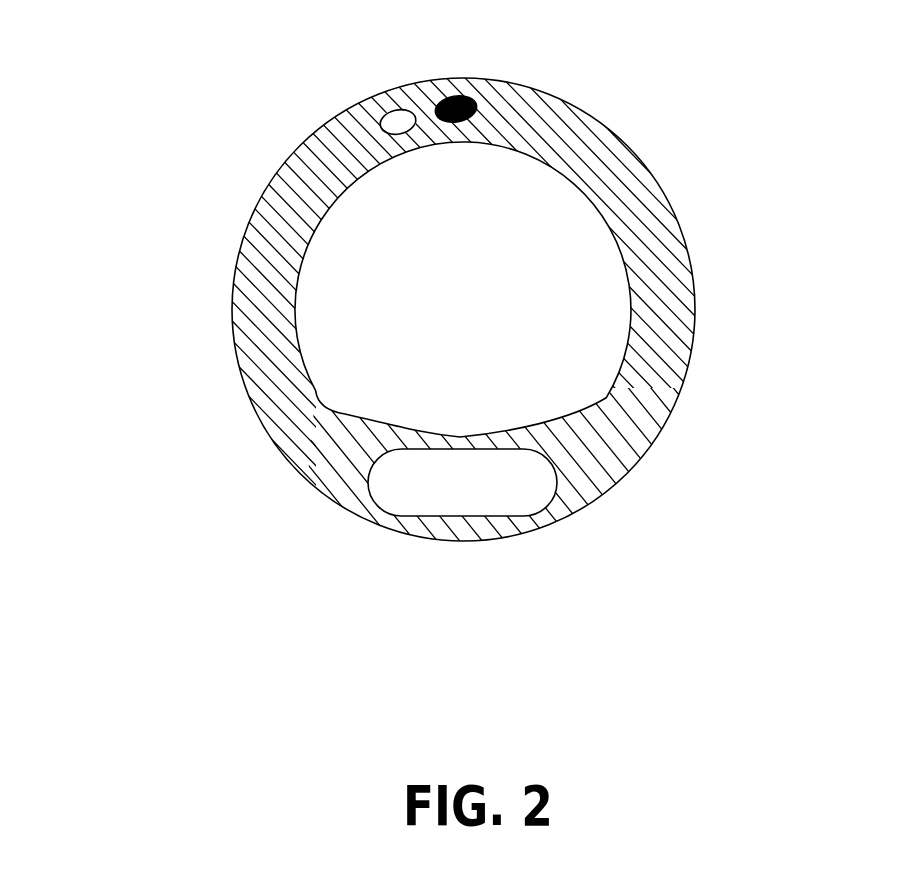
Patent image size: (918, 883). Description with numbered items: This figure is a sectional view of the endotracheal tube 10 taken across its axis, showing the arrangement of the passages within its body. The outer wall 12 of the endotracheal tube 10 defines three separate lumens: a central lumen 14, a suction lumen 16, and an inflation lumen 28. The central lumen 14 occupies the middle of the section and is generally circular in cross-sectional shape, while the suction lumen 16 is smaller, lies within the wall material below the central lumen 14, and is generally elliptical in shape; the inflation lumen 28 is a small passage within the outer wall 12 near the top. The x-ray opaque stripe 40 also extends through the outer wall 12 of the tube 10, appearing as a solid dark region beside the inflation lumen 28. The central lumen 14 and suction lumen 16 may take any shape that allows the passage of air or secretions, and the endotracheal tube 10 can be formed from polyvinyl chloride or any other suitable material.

The endotracheal tube 10 is at (168, 416).
The outer wall 12 is at (627, 455).
The central lumen 14 is at (583, 257).
The suction lumen 16 is at (432, 493).
The inflation lumen 28 is at (367, 95).
The x-ray opaque stripe 40 is at (500, 79).